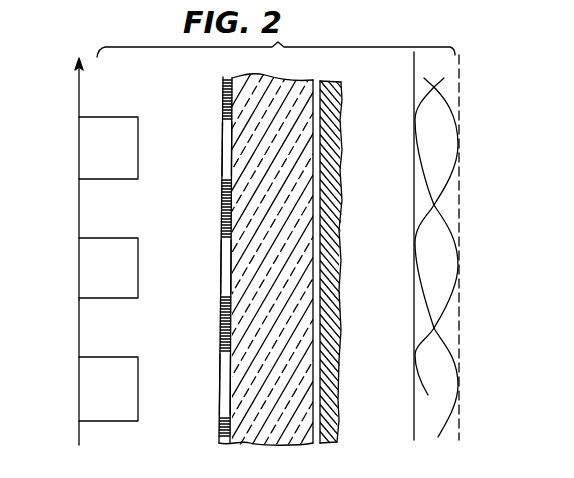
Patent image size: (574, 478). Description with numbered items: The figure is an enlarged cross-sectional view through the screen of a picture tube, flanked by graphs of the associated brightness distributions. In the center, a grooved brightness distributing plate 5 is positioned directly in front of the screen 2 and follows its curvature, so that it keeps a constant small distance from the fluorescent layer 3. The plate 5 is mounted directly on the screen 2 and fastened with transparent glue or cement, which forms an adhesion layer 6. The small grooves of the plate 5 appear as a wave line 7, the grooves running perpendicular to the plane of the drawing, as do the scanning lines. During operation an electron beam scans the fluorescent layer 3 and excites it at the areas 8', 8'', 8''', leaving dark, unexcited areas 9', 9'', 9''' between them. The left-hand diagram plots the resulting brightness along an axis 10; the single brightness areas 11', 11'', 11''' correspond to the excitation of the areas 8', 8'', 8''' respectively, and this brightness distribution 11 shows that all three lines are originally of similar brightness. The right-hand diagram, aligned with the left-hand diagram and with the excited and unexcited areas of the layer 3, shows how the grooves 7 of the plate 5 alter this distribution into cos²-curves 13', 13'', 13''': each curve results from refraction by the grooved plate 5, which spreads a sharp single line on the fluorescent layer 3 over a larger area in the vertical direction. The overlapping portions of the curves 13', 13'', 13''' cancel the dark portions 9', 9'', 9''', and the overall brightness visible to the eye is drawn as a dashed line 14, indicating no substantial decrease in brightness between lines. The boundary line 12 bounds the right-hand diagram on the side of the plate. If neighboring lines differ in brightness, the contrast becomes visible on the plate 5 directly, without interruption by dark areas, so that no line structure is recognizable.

The screen 2 is at (292, 100).
The fluorescent layer 3 is at (222, 441).
The grooved brightness distributing plate 5 is at (333, 135).
The adhesion layer 6 is at (316, 443).
The wave line 7 is at (342, 410).
The excited area 8' is at (210, 149).
The excited area 8'' is at (209, 267).
The excited area 8''' is at (208, 395).
The unexcited area 9' is at (208, 99).
The unexcited area 9'' is at (208, 208).
The unexcited area 9''' is at (208, 324).
The axis 10 is at (79, 97).
The brightness distribution 11 is at (104, 389).
The single brightness area 11' is at (120, 131).
The single brightness area 11'' is at (127, 248).
The single brightness area 11''' is at (129, 370).
The boundary line 12 is at (414, 72).
The cos²-curve 13' is at (465, 141).
The cos²-curve 13'' is at (470, 266).
The cos²-curve 13''' is at (471, 382).
The dashed line 14 is at (459, 437).